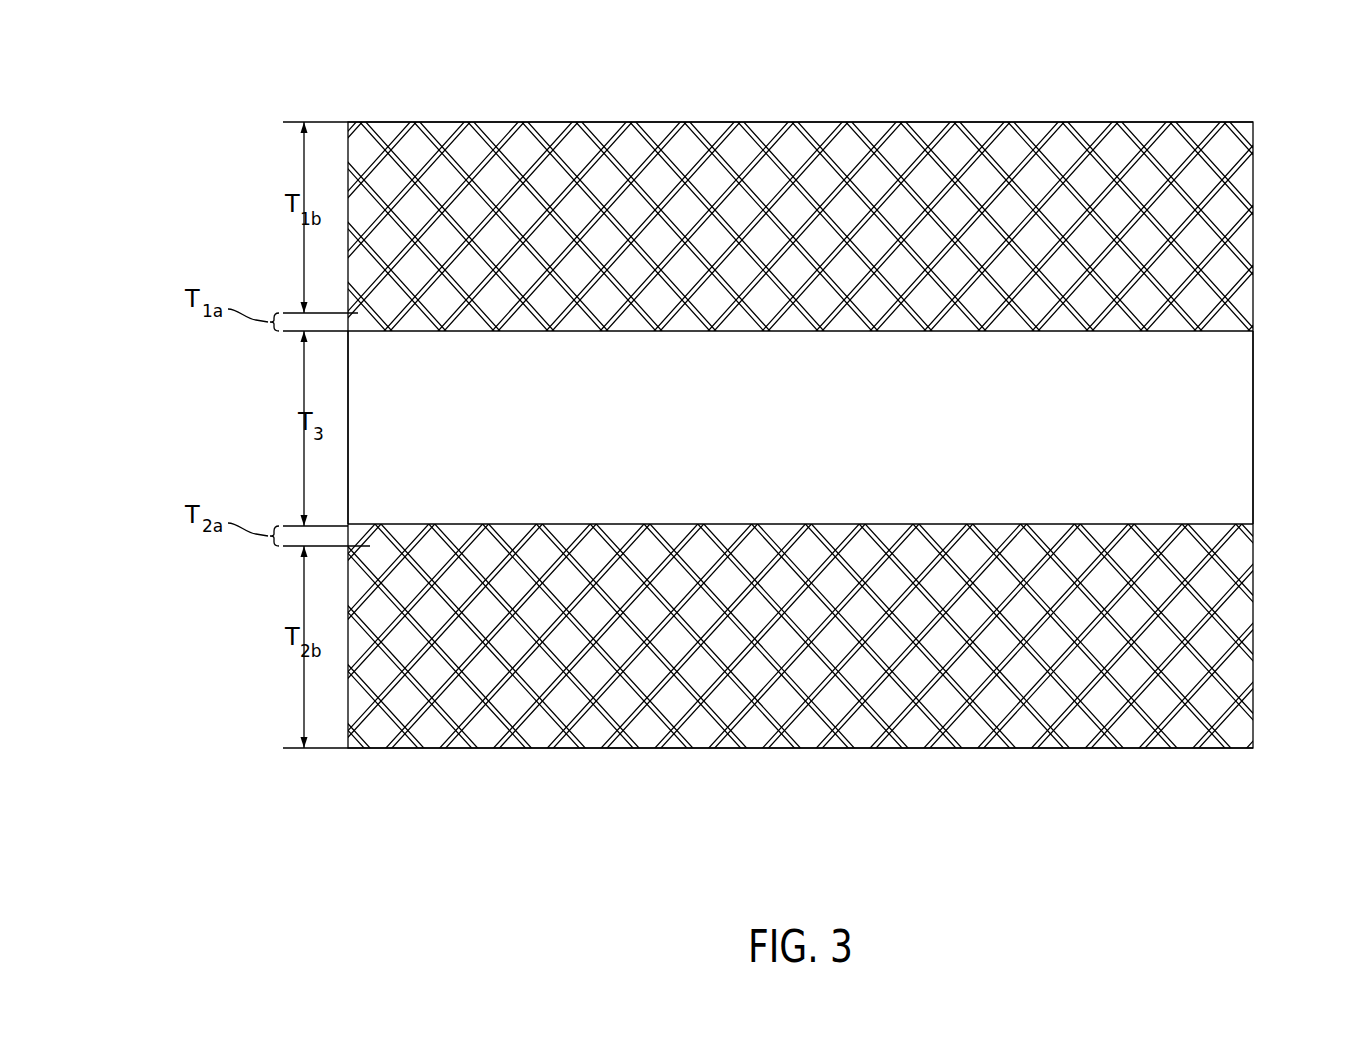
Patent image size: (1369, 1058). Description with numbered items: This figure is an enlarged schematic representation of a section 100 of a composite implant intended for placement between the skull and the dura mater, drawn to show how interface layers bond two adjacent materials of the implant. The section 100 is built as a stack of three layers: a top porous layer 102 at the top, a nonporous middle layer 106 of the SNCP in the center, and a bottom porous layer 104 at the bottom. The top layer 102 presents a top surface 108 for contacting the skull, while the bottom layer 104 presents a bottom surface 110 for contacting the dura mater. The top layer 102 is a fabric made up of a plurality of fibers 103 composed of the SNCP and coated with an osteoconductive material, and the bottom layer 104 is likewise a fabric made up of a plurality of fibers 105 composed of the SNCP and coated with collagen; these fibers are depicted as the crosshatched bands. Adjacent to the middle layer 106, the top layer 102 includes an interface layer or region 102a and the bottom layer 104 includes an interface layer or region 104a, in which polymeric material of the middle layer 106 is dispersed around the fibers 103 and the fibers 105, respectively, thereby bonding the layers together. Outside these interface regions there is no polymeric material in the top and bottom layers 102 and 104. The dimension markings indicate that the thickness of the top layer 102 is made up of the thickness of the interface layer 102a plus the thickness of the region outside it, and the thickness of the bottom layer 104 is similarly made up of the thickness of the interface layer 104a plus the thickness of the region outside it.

The section of composite implant 100 is at (1187, 790).
The top porous layer 102 is at (1253, 203).
The interface layer of top layer 102a is at (1253, 323).
The fibers of top layer 103 is at (452, 192).
The bottom porous layer 104 is at (1253, 673).
The interface layer of bottom layer 104a is at (1245, 530).
The fibers of bottom layer 105 is at (428, 662).
The middle layer 106 is at (1253, 435).
The top surface 108 is at (712, 122).
The bottom surface 110 is at (737, 748).